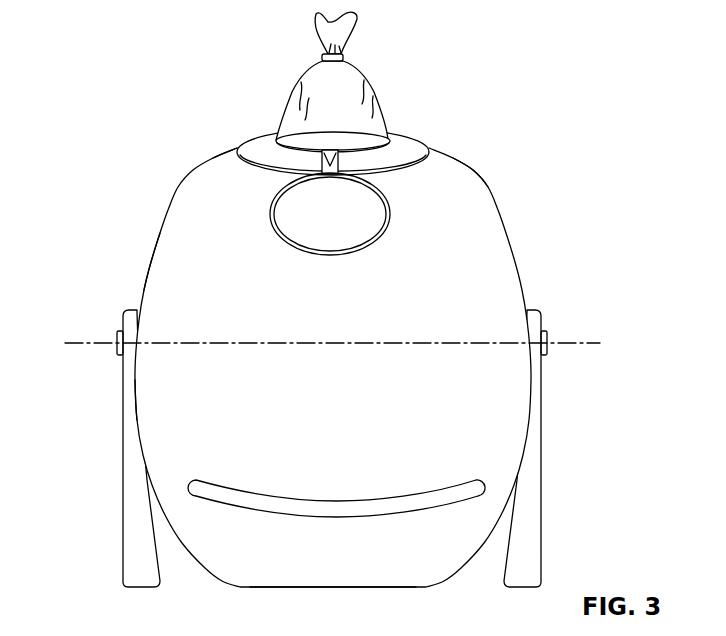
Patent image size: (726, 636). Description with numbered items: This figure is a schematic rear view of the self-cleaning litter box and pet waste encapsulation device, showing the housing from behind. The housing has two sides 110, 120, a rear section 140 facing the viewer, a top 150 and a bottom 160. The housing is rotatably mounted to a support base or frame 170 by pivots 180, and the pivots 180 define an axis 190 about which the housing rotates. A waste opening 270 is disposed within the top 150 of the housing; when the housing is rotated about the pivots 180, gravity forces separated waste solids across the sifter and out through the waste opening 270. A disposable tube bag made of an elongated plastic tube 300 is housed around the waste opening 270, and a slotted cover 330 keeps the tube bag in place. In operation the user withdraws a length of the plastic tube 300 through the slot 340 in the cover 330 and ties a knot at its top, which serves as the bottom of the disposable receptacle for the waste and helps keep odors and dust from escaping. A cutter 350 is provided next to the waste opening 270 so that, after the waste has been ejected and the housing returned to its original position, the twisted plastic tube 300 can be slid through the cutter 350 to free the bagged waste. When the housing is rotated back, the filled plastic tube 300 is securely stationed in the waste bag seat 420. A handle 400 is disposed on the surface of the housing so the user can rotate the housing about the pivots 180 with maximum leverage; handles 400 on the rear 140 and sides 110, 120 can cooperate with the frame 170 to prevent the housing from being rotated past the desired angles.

The side 110 is at (520, 257).
The side 120 is at (148, 243).
The rear section 140 is at (351, 309).
The top 150 is at (451, 160).
The bottom 160 is at (316, 589).
The support base or frame 170 is at (122, 410).
The pivot 180 is at (548, 333).
The axis 190 is at (78, 342).
The waste opening 270 is at (353, 133).
The plastic tube 300 is at (378, 99).
The slotted cover 330 is at (243, 152).
The slot 340 is at (276, 140).
The cutter 350 is at (373, 183).
The handle 400 is at (408, 494).
The waste bag seat 420 is at (351, 228).